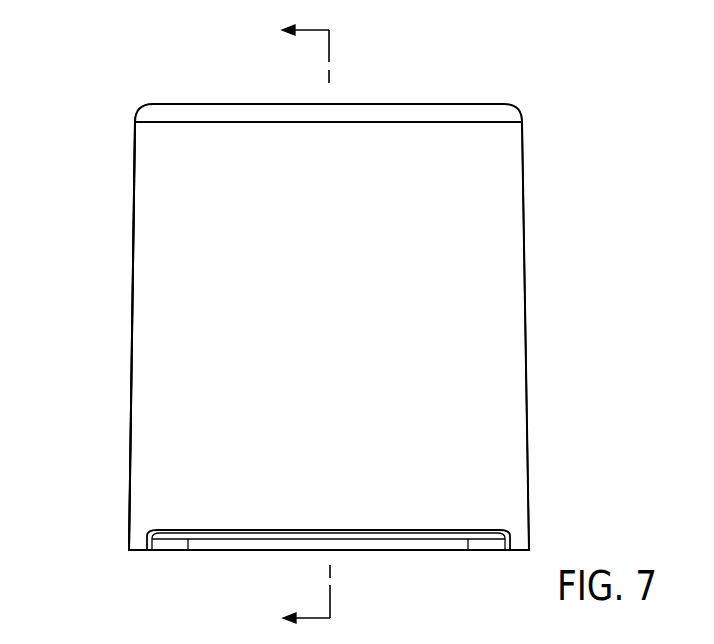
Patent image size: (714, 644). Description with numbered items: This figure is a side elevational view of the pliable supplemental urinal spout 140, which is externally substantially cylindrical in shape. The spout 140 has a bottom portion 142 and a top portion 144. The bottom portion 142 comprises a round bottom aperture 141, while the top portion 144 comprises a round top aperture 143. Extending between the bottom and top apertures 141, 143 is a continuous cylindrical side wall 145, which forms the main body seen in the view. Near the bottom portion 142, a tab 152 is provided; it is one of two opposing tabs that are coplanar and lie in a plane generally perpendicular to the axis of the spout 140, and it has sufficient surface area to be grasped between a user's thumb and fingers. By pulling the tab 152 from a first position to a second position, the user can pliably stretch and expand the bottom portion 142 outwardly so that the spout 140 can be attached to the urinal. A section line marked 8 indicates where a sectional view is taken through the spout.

The pliable supplemental urinal spout 140 is at (84, 249).
The round bottom aperture 141 is at (228, 553).
The bottom portion 142 is at (140, 503).
The round top aperture 143 is at (403, 104).
The top portion 144 is at (483, 144).
The continuous cylindrical side wall 145 is at (343, 355).
The tab 152 is at (437, 531).
The section line 8- 8 is at (294, 327).